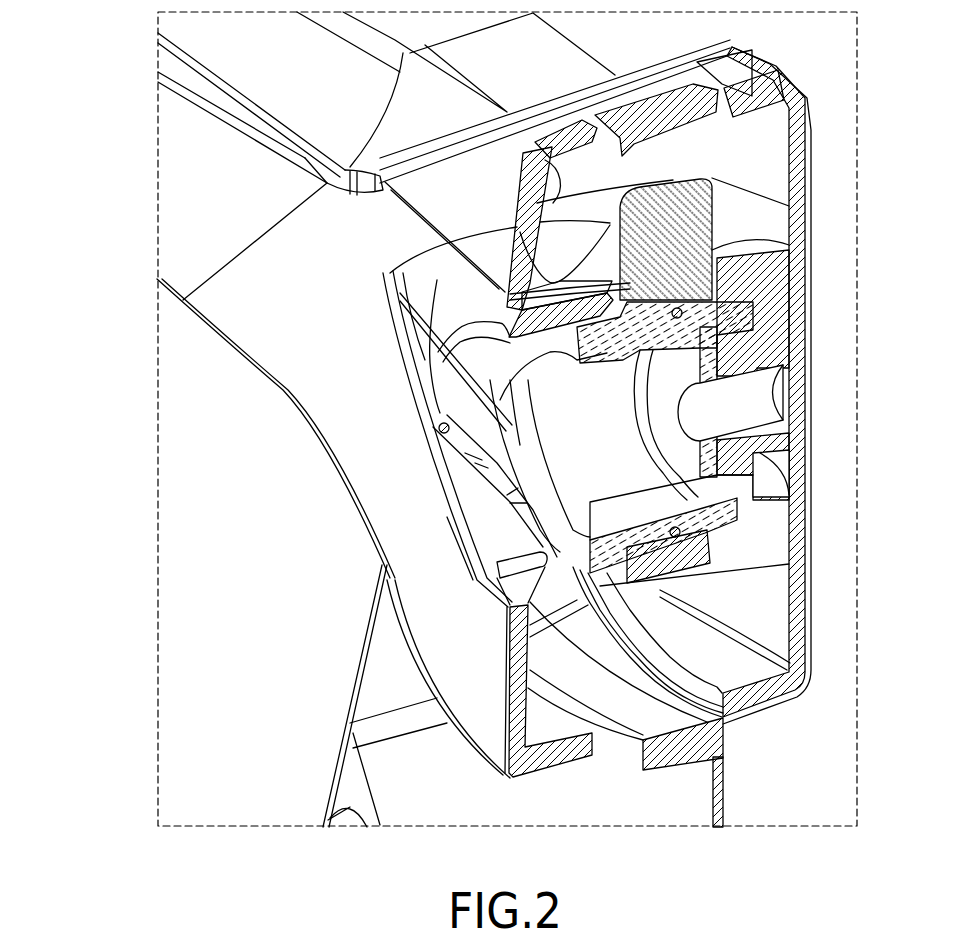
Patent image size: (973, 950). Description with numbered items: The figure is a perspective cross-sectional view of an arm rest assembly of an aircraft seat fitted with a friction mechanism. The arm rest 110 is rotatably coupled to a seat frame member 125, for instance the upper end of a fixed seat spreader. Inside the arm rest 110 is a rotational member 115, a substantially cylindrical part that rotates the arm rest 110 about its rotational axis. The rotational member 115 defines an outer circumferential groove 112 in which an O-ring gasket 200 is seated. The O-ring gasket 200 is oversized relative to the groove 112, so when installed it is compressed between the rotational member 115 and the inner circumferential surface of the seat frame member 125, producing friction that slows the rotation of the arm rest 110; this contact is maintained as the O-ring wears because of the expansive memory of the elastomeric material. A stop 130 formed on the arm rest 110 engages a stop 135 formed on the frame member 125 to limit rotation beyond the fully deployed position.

The arm rest 110 is at (282, 283).
The outer circumferential groove 112 is at (690, 313).
The rotational member 115 is at (740, 493).
The seat frame member 125 is at (690, 232).
The stop 130 is at (450, 352).
The stop 135 is at (477, 405).
The O-ring gasket 200 is at (600, 563).